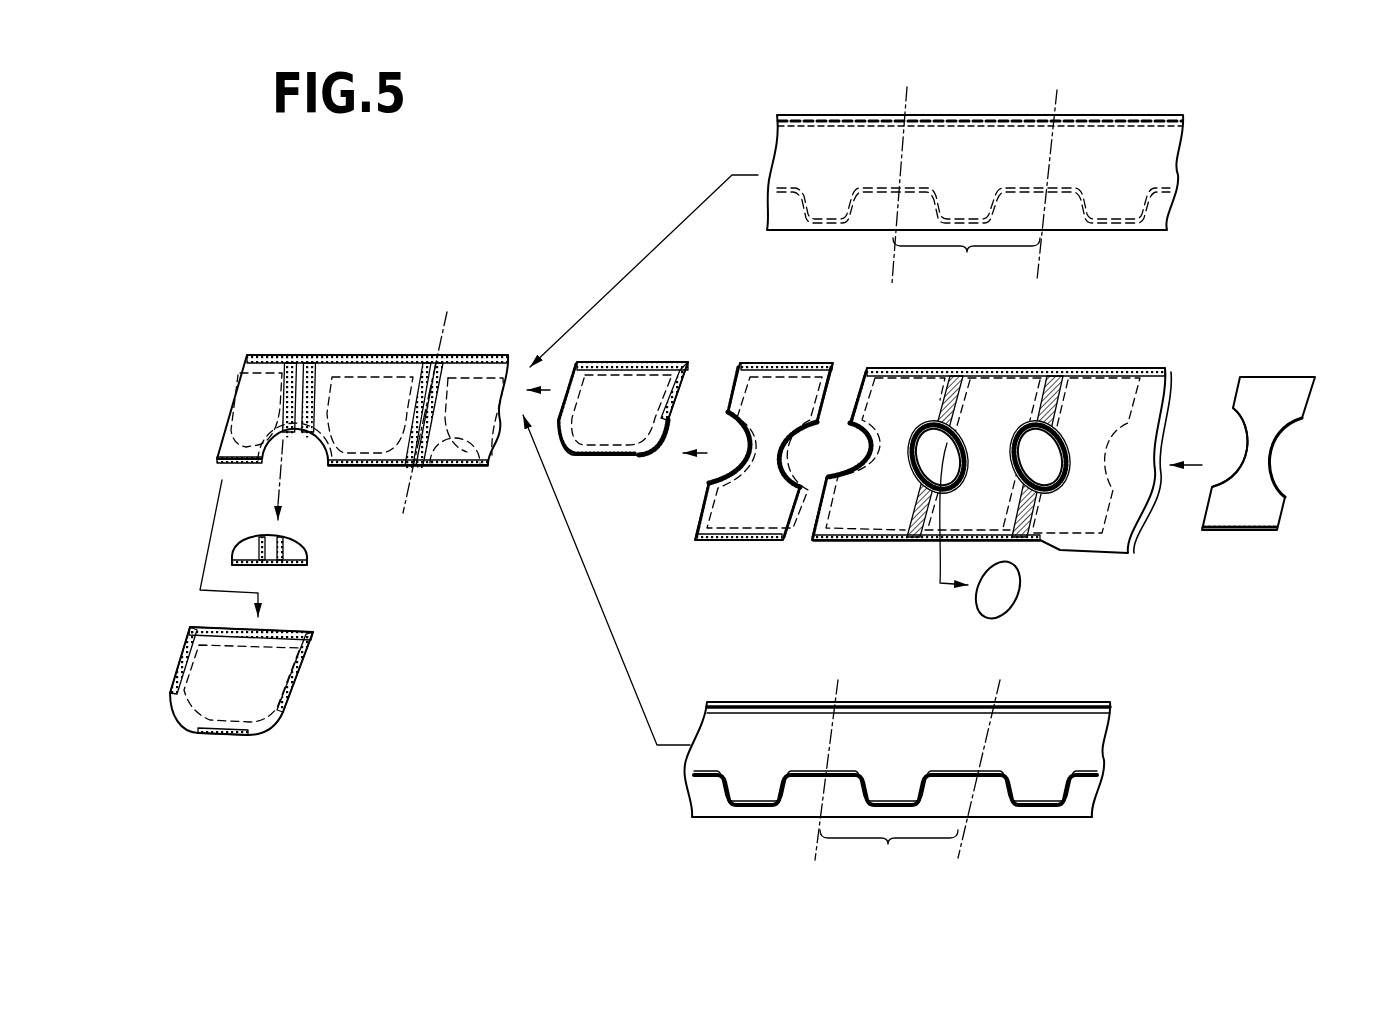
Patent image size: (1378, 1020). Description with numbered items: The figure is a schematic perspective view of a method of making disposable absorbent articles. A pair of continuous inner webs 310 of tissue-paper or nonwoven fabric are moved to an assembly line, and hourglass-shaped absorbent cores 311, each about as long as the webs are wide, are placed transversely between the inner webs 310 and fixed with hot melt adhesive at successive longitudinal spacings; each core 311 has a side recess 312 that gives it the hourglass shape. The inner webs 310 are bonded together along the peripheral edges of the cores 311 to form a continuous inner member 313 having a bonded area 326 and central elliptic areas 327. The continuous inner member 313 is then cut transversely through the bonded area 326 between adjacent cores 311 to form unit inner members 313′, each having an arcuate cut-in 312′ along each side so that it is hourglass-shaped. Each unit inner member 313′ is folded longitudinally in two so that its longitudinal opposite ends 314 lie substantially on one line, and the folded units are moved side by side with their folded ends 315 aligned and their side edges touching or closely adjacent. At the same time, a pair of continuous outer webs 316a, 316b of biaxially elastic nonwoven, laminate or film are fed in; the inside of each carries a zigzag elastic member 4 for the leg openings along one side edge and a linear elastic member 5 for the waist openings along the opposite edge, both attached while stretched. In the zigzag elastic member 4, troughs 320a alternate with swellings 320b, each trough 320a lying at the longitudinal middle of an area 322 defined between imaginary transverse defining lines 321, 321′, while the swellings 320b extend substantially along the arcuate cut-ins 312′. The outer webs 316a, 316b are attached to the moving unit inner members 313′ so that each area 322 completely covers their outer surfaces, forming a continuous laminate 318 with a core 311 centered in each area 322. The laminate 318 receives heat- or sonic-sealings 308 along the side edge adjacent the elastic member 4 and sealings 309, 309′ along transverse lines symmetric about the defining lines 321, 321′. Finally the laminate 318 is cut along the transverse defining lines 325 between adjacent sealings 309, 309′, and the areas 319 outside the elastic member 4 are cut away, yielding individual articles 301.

The zigzag elastic member for the leg openings 4 is at (1160, 190).
The linear elastic member for the waist openings 5 is at (988, 120).
The individual article 301 is at (170, 653).
The heat- or sonic-sealing 308 is at (452, 472).
The heat- or sonic-sealing 309 is at (300, 357).
The heat- or sonic-sealing 309′ is at (320, 357).
The continuous inner web 310 is at (1125, 553).
The absorbent core 311 is at (1250, 515).
The notch 312 is at (1240, 450).
The arcuate cut-in 312′ is at (737, 443).
The continuous inner member 313 is at (1053, 367).
The unit inner member 313′ is at (647, 437).
The longitudinal opposite ends 314 is at (690, 373).
The ends corresponding to the folds 315 is at (605, 458).
The continuous outer web 316a is at (1170, 212).
The continuous outer web 316b is at (1110, 740).
The continuous laminate 318 is at (475, 357).
The area outside the elastic member for the leg openings 319 is at (297, 557).
The trough 320a is at (957, 217).
The swelling 320b is at (1033, 187).
The transverse defining line 321 is at (892, 237).
The transverse defining line 321′ is at (1040, 253).
The area 322 is at (930, 559).
The transverse defining line 325 is at (287, 482).
The bonded area 326 is at (953, 380).
The central elliptic area 327 is at (1040, 450).